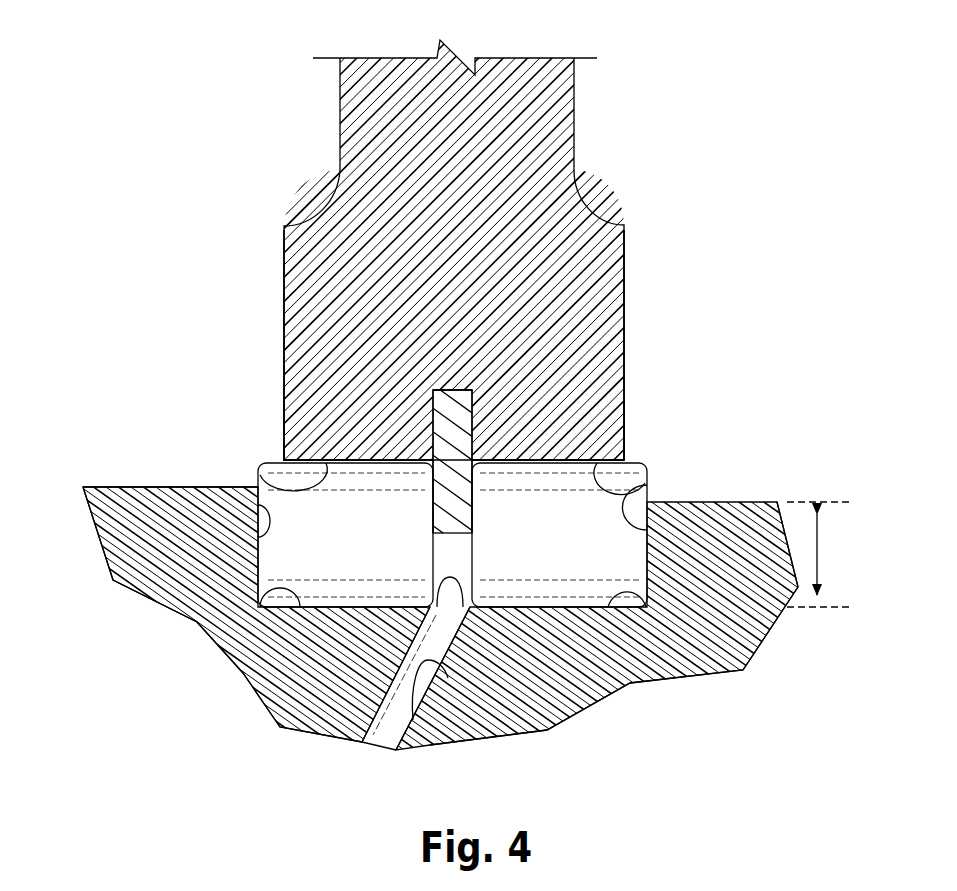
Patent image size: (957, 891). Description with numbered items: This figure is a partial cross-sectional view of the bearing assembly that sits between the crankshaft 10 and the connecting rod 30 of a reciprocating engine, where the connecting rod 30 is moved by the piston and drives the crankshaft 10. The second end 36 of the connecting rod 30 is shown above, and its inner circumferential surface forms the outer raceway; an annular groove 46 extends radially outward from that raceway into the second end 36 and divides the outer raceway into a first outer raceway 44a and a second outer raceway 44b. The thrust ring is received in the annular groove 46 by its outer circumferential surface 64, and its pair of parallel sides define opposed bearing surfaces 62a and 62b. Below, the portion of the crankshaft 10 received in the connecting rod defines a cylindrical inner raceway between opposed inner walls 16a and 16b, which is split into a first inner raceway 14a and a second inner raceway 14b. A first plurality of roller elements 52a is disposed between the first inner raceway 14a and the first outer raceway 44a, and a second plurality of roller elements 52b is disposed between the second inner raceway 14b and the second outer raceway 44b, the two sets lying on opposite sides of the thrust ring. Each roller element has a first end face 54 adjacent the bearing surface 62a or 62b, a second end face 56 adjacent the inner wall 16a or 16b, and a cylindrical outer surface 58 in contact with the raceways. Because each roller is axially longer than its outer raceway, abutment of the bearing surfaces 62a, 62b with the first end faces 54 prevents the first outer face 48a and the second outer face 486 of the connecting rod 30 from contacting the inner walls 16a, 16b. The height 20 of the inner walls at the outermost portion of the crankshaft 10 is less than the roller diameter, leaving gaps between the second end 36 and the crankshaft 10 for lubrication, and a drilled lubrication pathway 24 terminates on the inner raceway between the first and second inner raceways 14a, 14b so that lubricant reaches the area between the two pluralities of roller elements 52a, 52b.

The crankshaft 10 is at (778, 646).
The first inner raceway 14a is at (262, 590).
The second inner raceway 14b is at (645, 588).
The inner wall 16a is at (262, 506).
The inner wall 16b is at (652, 488).
The slot depth 20 is at (820, 554).
The lubrication pathway 24 is at (413, 720).
The connecting rod 30 is at (290, 85).
The second end 36 is at (252, 362).
The first outer raceway 44a is at (262, 466).
The second outer raceway 44b is at (645, 466).
The annular groove 46 is at (480, 422).
The first outer face 48a is at (283, 264).
The second side wall 486 is at (624, 270).
The first plurality of roller elements 52a is at (210, 412).
The second plurality of roller elements 52b is at (708, 420).
The first end face 54 is at (458, 598).
The second end face 56 is at (258, 483).
The cylindrical outer surface 58 is at (585, 460).
The bearing surface 62a is at (430, 503).
The bearing surface 62b is at (474, 502).
The outer circumferential surface 64 is at (445, 388).